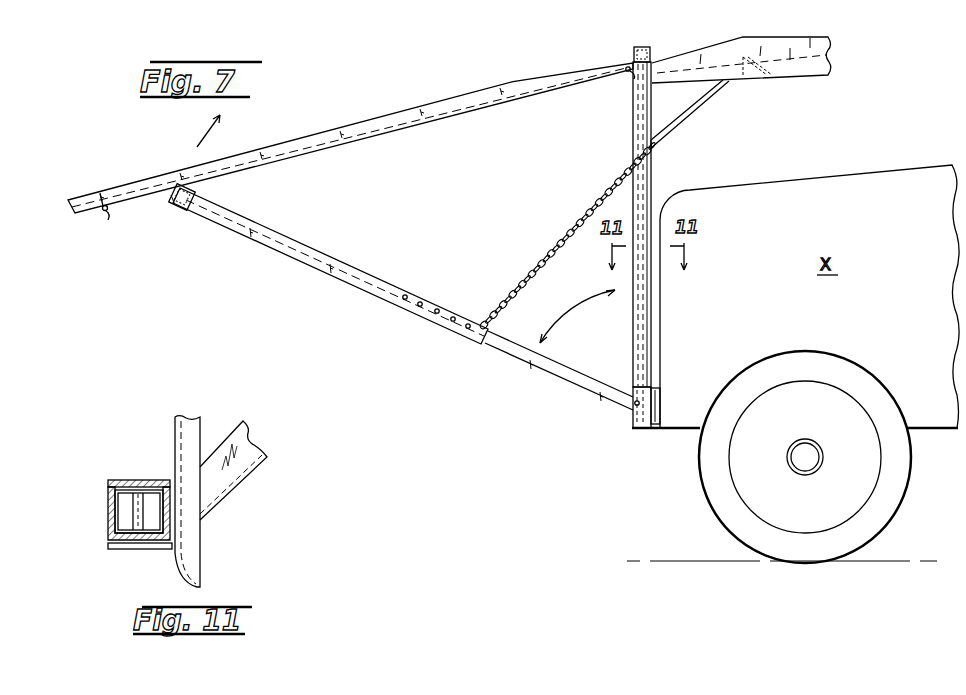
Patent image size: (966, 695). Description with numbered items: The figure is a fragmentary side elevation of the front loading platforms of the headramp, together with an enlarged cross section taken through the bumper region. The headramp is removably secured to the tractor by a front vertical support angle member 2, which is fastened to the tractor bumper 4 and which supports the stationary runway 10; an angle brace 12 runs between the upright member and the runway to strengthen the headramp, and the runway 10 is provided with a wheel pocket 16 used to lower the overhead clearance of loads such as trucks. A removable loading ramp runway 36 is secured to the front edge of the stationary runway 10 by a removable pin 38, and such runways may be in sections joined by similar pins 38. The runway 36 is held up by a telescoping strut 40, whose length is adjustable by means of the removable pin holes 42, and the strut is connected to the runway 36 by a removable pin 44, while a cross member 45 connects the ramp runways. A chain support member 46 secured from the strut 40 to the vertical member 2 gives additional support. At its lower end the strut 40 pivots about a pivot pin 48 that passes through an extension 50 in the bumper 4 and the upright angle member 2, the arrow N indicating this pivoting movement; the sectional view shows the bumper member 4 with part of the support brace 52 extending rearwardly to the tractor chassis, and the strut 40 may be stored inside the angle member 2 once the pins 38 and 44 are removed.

In FIG. 7, the front vertical support angle member 2 is at (638, 129).
In FIG. 11, the front vertical support angle member 2 is at (145, 482).
In FIG. 7, the tractor bumper 4 is at (660, 392).
In FIG. 11, the tractor bumper 4 is at (185, 432).
In FIG. 7, the stationary runway 10 is at (741, 56).
In FIG. 7, the angle brace 12 is at (690, 113).
In FIG. 7, the wheel pocket 16 is at (786, 66).
In FIG. 7, the loading ramp runway 36 is at (407, 117).
In FIG. 7, the removable pin 38 is at (627, 71).
In FIG. 7, the telescoping strut 40 is at (651, 192).
In FIG. 11, the telescoping strut 40 is at (110, 500).
In FIG. 7, the removable pin hole 42 is at (437, 309).
In FIG. 7, the removable pin 44 is at (170, 197).
In FIG. 7, the cross member 45 is at (189, 212).
In FIG. 7, the chain support member 46 is at (584, 217).
In FIG. 7, the pivot pin 48 is at (633, 404).
In FIG. 11, the pivot pin 48 is at (133, 520).
In FIG. 7, the extension 50 is at (637, 428).
In FIG. 11, the extension 50 is at (117, 547).
In FIG. 11, the support brace 52 is at (235, 482).
In FIG. 7, the pivoting direction arrow N is at (640, 322).